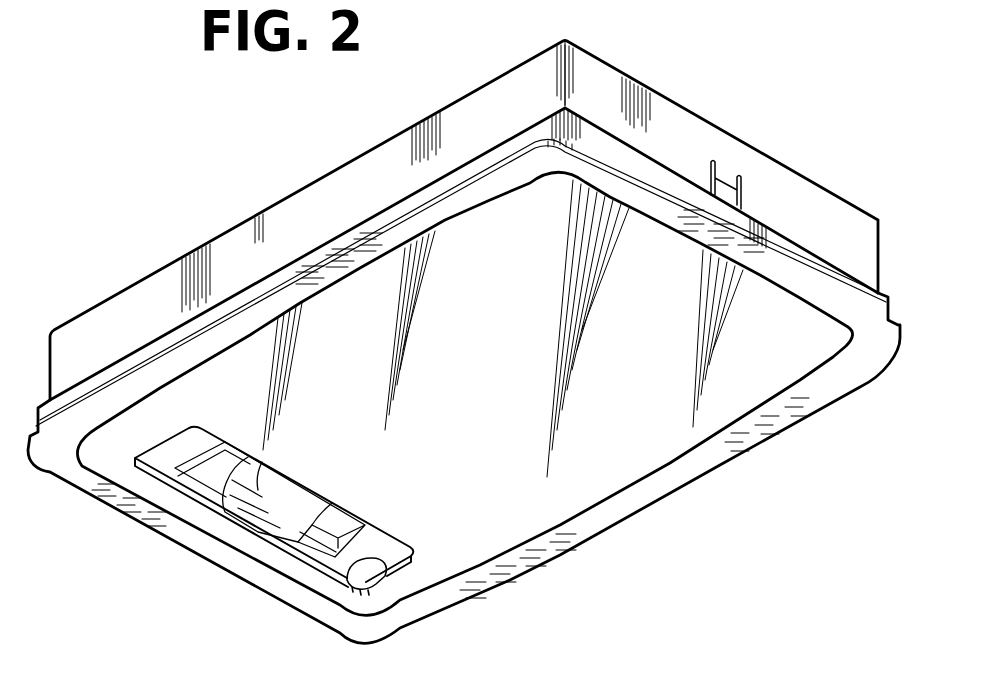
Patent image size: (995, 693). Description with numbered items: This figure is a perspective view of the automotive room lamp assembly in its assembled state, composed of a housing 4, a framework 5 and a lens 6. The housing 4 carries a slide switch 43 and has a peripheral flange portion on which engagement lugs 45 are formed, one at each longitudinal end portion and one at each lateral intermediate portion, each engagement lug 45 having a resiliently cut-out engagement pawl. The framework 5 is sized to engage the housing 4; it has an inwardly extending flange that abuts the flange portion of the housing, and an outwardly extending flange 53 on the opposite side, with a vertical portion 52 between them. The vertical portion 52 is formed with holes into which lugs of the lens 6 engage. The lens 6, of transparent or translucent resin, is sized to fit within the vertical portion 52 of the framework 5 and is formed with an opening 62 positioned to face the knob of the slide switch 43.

The housing 4 is at (665, 95).
The engagement lug 45 is at (736, 179).
The vertical portion 52 is at (827, 267).
The flange 53 is at (833, 377).
The lens 6 is at (662, 410).
The framework 5 is at (665, 503).
The slide switch 43 is at (258, 532).
The opening 62 is at (347, 580).